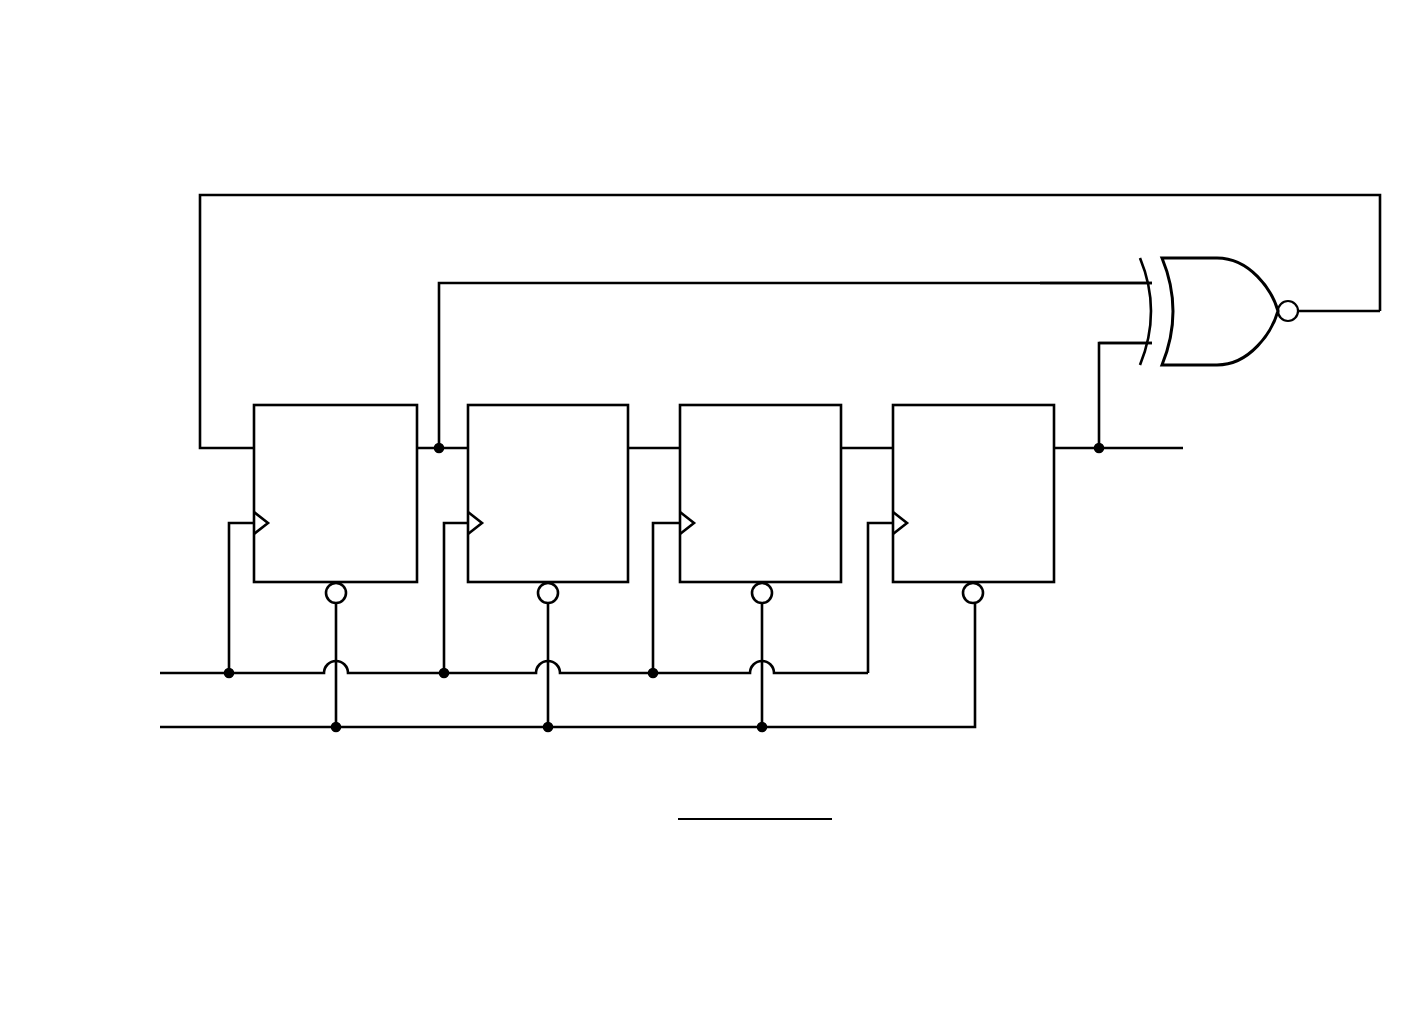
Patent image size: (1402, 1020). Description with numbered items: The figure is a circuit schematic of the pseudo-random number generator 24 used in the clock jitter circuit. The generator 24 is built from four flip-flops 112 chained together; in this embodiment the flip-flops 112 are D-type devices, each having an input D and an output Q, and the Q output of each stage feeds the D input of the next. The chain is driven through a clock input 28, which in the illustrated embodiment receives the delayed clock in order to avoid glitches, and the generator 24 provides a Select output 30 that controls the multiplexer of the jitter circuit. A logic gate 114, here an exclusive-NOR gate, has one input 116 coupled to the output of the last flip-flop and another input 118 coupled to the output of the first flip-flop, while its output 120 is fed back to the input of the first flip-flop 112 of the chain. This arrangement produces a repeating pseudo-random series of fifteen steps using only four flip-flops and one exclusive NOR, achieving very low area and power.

The pseudo-random number generator 24 is at (302, 112).
The flip-flops 112 is at (340, 405).
The clock input 28 is at (185, 673).
The output 30 is at (1142, 446).
The logic gate 114 is at (1257, 270).
The input 116 is at (1147, 345).
The input 118 is at (1148, 285).
The output 120 is at (1303, 316).